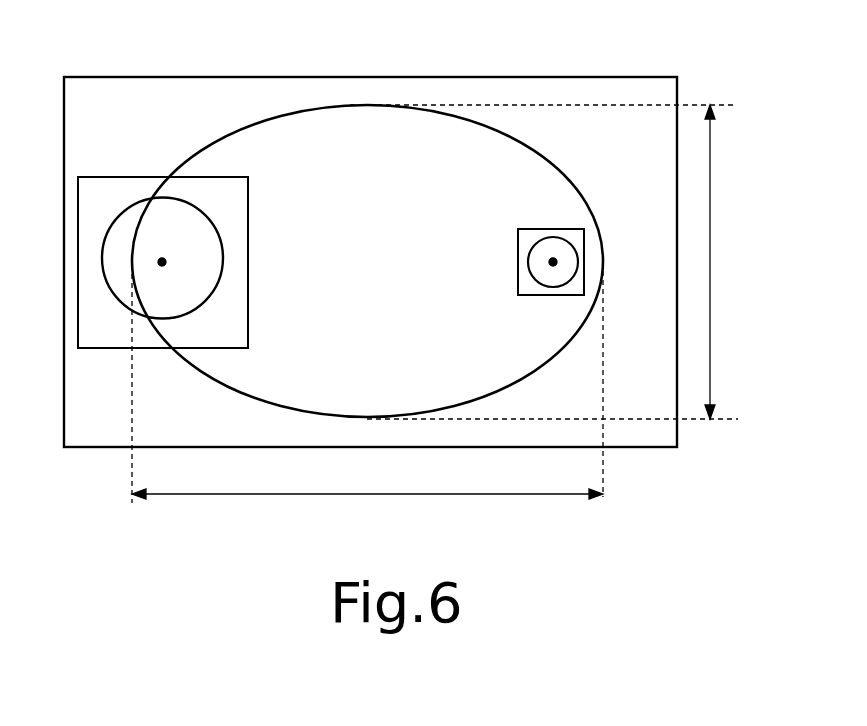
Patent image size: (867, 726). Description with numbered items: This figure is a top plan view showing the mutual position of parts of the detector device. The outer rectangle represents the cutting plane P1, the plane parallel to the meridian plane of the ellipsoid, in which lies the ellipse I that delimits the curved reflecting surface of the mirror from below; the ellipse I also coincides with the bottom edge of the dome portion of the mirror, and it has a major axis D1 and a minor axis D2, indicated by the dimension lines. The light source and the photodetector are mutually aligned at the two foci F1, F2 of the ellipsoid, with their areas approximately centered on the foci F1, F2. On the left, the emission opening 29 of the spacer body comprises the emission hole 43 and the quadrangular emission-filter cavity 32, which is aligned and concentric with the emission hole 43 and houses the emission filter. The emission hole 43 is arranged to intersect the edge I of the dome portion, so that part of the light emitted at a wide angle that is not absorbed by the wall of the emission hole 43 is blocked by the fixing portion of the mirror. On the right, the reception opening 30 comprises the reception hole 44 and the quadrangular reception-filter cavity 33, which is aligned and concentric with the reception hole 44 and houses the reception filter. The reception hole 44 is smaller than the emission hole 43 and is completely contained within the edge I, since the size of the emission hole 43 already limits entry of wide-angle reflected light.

The cutting plane P1 is at (577, 75).
The ellipse I is at (348, 105).
The emission-filter cavity 32 is at (143, 187).
The emission opening 29 is at (126, 227).
The emission hole 43 is at (203, 256).
The focus F1 is at (166, 278).
The reception-filter cavity 33 is at (552, 295).
The reception hole 44 is at (562, 262).
The reception opening 30 is at (547, 248).
The focus F2 is at (554, 250).
The major axis D1 is at (367, 382).
The minor axis D2 is at (551, 262).